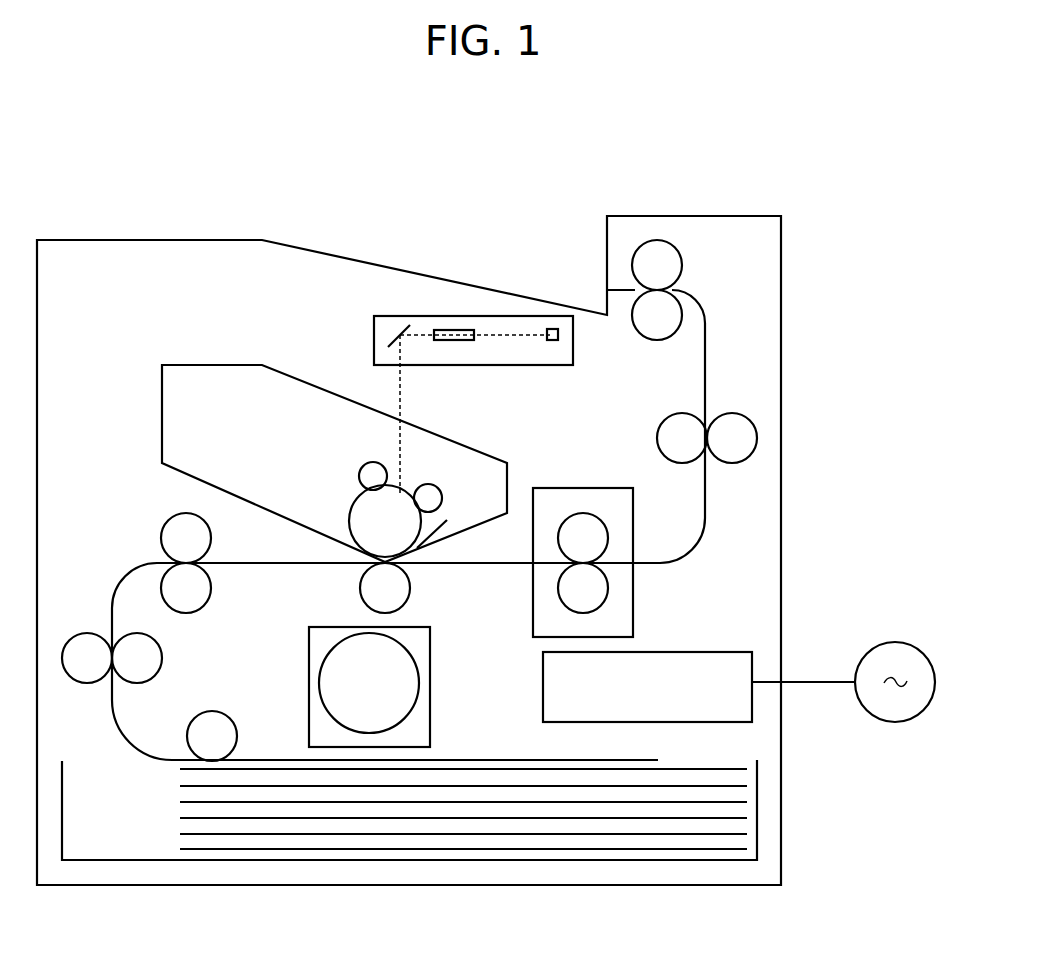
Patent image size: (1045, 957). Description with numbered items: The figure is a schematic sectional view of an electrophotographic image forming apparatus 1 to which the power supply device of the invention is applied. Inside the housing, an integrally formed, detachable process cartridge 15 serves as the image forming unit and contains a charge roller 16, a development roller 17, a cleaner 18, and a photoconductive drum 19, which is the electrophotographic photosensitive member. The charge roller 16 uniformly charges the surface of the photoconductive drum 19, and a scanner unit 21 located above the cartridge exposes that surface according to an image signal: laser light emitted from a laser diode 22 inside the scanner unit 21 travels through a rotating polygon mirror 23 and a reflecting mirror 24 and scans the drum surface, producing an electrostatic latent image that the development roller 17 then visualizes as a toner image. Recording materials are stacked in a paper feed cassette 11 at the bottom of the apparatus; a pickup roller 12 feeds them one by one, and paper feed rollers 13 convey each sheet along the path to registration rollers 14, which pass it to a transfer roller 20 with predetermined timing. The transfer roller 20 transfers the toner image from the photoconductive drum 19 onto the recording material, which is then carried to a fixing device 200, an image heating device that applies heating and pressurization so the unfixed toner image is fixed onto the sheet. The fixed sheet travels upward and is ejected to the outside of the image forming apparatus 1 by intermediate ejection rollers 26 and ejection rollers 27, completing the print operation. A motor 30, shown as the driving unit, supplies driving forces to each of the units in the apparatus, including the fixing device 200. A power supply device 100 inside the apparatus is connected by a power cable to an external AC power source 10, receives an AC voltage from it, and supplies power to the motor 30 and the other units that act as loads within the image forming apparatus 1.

The image forming apparatus 1 is at (196, 240).
The AC power source 10 is at (883, 641).
The paper feed cassette 11 is at (757, 815).
The pickup roller 12 is at (191, 745).
The paper feed rollers 13 is at (78, 682).
The registration rollers 14 is at (167, 522).
The process cartridge 15 is at (218, 365).
The charge roller 16 is at (437, 489).
The development roller 17 is at (364, 466).
The cleaner 18 is at (447, 521).
The photoconductive drum 19 is at (352, 497).
The transfer roller 20 is at (405, 596).
The scanner unit 21 is at (374, 340).
The laser diode 22 is at (550, 328).
The rotating polygon mirror 23 is at (465, 328).
The reflecting mirror 24 is at (383, 315).
The intermediate ejection rollers 26 is at (668, 414).
The ejection rollers 27 is at (682, 262).
The motor 30 is at (430, 677).
The power supply device 100 is at (672, 647).
The fixing device 200 is at (577, 487).